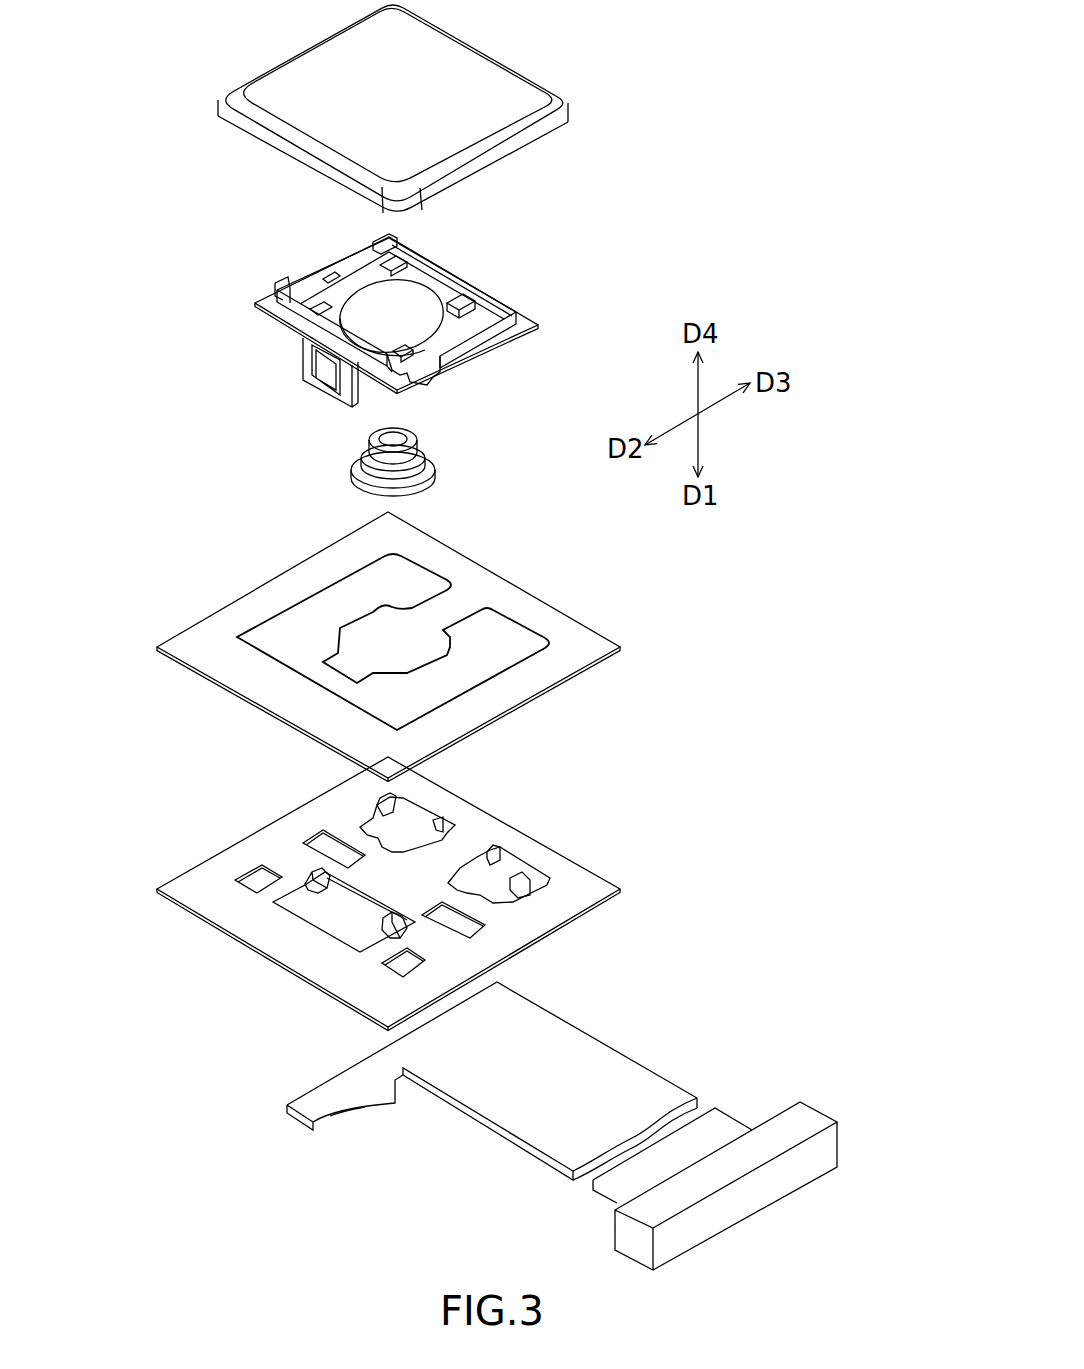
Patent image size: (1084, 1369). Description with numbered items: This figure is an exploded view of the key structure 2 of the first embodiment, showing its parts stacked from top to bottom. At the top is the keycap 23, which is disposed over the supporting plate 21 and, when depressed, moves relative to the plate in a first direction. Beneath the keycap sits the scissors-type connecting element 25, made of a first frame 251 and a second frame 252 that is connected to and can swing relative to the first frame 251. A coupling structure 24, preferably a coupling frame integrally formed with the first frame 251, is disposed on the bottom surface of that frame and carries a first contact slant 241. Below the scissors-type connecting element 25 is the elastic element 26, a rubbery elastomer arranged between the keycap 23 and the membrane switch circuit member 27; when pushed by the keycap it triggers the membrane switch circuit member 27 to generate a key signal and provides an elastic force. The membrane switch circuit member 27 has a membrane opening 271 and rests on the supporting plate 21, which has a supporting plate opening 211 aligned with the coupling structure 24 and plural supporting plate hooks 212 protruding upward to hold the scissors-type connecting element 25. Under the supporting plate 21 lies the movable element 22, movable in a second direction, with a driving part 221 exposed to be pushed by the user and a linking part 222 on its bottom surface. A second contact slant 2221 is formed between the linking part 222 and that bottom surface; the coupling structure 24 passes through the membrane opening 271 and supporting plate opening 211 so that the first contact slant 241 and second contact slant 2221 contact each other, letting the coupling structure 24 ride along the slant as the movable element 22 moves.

The key structure 2 is at (191, 27).
The supporting plate 21 is at (400, 894).
The supporting plate opening 211 is at (332, 915).
The supporting plate hooks 212 is at (313, 870).
The movable element 22 is at (547, 1126).
The driving part 221 is at (753, 1197).
The linking part 222 is at (387, 1094).
The second contact slant 2221 is at (362, 1112).
The keycap 23 is at (463, 70).
The coupling structure 24 is at (390, 343).
The first contact slant 241 is at (328, 388).
The scissors-type connecting element 25 is at (428, 305).
The first frame 251 is at (493, 333).
The second frame 252 is at (420, 273).
The elastic element 26 is at (422, 462).
The membrane switch circuit member 27 is at (388, 647).
The membrane opening 271 is at (508, 638).